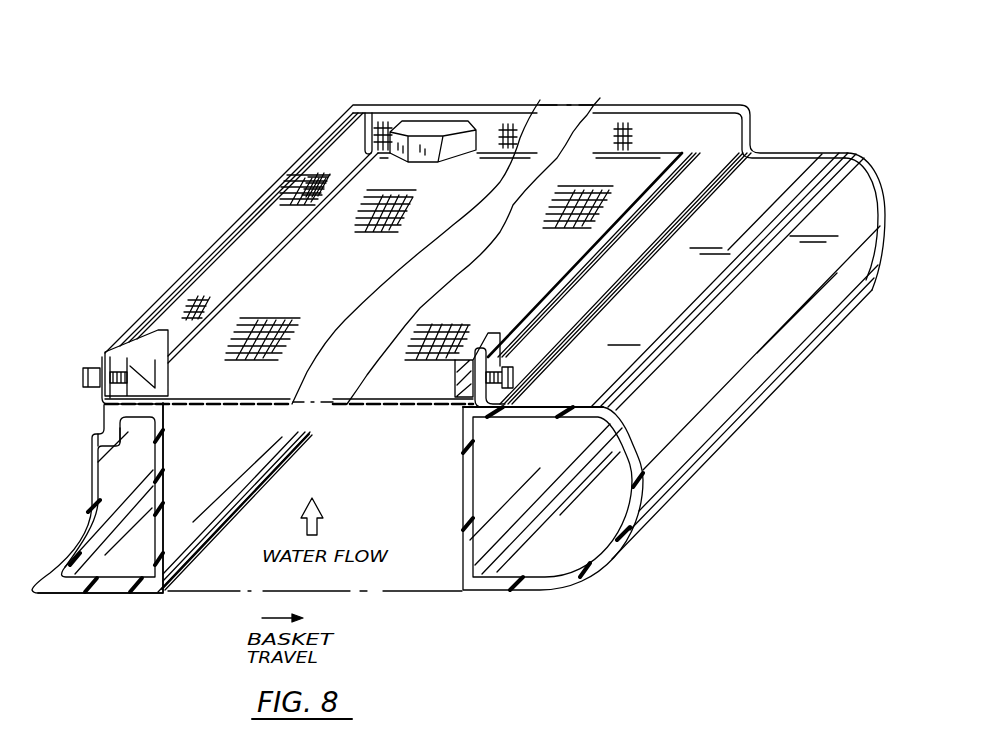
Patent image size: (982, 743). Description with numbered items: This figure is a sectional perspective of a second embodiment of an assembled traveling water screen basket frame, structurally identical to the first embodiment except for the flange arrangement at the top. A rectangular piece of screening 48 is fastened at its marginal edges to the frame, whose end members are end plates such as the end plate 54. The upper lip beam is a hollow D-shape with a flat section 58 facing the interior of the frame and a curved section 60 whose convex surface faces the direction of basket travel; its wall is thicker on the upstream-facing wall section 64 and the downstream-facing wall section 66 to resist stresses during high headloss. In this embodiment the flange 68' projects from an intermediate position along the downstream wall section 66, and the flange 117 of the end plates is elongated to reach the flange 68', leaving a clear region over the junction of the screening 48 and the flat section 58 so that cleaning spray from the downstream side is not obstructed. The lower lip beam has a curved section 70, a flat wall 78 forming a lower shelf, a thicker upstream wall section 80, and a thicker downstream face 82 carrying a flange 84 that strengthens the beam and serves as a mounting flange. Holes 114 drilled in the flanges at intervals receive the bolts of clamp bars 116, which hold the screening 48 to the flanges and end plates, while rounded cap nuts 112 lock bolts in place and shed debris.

The screening 48 is at (375, 406).
The end plate 54 is at (603, 100).
The flat section 58 is at (463, 485).
The curved section 60 is at (637, 532).
The wall section 64 is at (537, 585).
The wall section 66 is at (548, 416).
The flange 68' is at (650, 258).
The curved section 70 is at (86, 523).
The flat wall 78 is at (163, 498).
The upstream wall section 80 is at (102, 590).
The downstream face 82 is at (130, 412).
The flange 84 is at (113, 348).
The cap nuts 112 is at (263, 406).
The holes 114 is at (103, 403).
The clamp bar 116 is at (432, 128).
The flange 117 is at (741, 104).